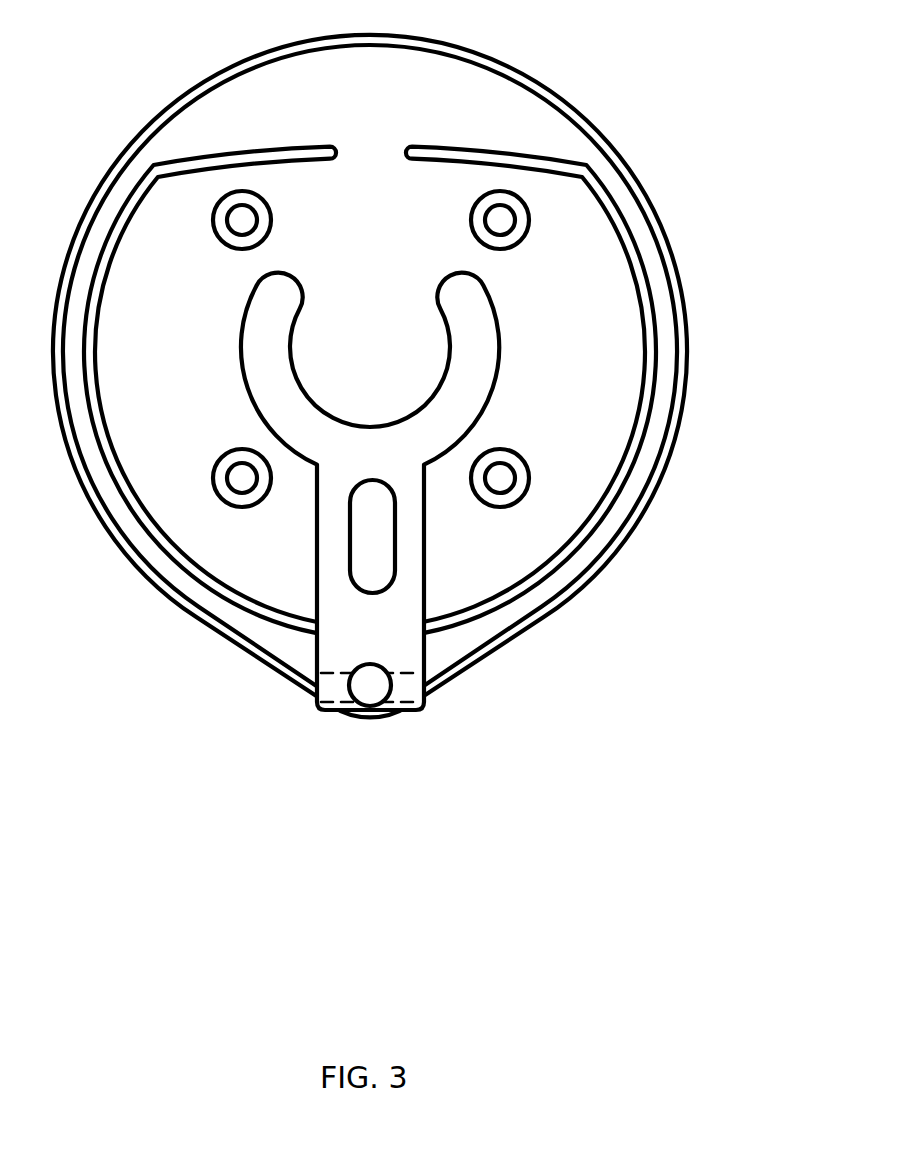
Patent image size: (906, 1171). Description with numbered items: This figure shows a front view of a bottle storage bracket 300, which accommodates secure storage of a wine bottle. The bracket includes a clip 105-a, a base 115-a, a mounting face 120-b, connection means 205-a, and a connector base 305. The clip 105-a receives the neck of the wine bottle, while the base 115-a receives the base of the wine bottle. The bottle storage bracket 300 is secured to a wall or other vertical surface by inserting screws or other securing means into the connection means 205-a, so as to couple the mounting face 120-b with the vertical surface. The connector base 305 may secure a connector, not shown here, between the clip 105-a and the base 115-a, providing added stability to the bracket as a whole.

The bottle storage bracket 300 is at (423, 564).
The clip 105-a is at (417, 516).
The base 115-a is at (683, 390).
The mounting face 120-b is at (663, 235).
The connection means 205-a is at (270, 212).
The connector base 305 is at (393, 700).